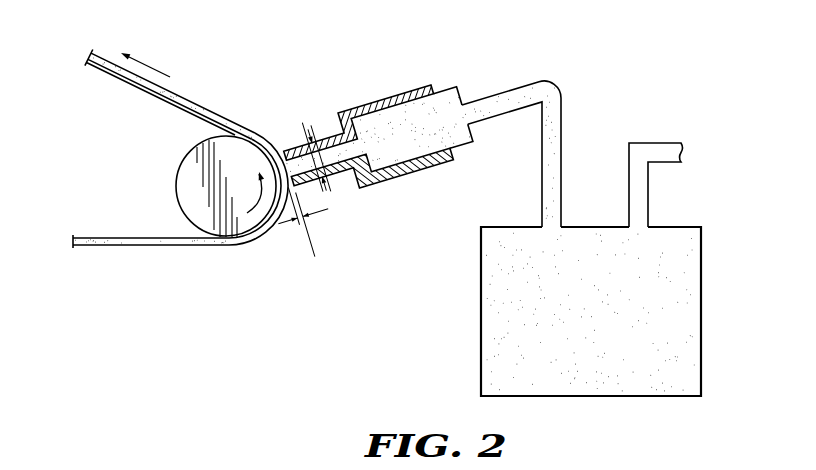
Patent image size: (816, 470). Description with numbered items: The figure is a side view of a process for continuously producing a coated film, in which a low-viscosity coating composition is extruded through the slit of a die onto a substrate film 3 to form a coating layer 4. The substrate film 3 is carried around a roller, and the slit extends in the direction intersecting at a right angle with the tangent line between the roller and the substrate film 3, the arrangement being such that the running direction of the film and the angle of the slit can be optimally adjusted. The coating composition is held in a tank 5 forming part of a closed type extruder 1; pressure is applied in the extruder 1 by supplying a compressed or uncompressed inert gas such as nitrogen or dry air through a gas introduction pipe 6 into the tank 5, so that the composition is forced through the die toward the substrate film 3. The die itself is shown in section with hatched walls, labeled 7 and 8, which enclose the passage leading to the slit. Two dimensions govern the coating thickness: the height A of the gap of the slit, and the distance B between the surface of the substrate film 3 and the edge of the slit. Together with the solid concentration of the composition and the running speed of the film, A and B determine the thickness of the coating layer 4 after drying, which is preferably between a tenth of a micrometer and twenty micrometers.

The extruder 1 is at (587, 103).
The substrate film 3 is at (193, 246).
The coating layer 4 is at (192, 101).
The tank 5 is at (472, 337).
The gas introduction pipe 6 is at (658, 147).
The nozzle body (upper wall) 7 is at (343, 110).
The nozzle nut (lower wall) 8 is at (410, 152).
The height of the gap of slit A is at (305, 138).
The distance between the surface of a substrate film and the edge of a slit B is at (304, 233).